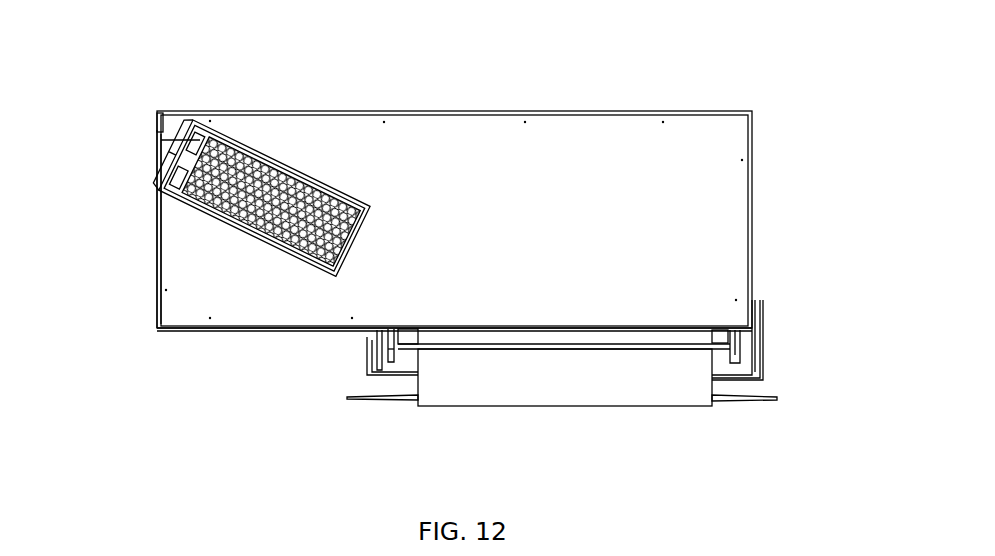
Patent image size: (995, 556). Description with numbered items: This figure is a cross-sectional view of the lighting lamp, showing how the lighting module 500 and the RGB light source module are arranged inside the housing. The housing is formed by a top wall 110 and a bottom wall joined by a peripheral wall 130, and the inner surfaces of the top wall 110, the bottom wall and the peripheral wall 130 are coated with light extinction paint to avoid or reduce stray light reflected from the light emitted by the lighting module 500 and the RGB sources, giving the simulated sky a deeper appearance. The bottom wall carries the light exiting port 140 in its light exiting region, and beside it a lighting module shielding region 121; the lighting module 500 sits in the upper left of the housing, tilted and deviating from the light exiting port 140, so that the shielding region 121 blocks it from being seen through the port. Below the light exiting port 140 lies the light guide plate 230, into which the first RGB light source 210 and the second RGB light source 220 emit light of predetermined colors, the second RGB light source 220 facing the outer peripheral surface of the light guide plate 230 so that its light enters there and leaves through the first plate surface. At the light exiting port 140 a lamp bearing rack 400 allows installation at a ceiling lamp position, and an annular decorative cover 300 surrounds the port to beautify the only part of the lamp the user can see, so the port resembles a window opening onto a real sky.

The top wall 110 is at (422, 110).
The lighting module shielding region 121 is at (260, 328).
The peripheral wall 130 is at (158, 235).
The light exiting port 140 is at (605, 328).
The first RGB light source 210 is at (390, 345).
The second RGB light source 220 is at (757, 338).
The light guide plate 230 is at (548, 345).
The annular decorative cover 300 is at (735, 407).
The lamp bearing rack 400 is at (367, 358).
The lighting module 500 is at (255, 130).